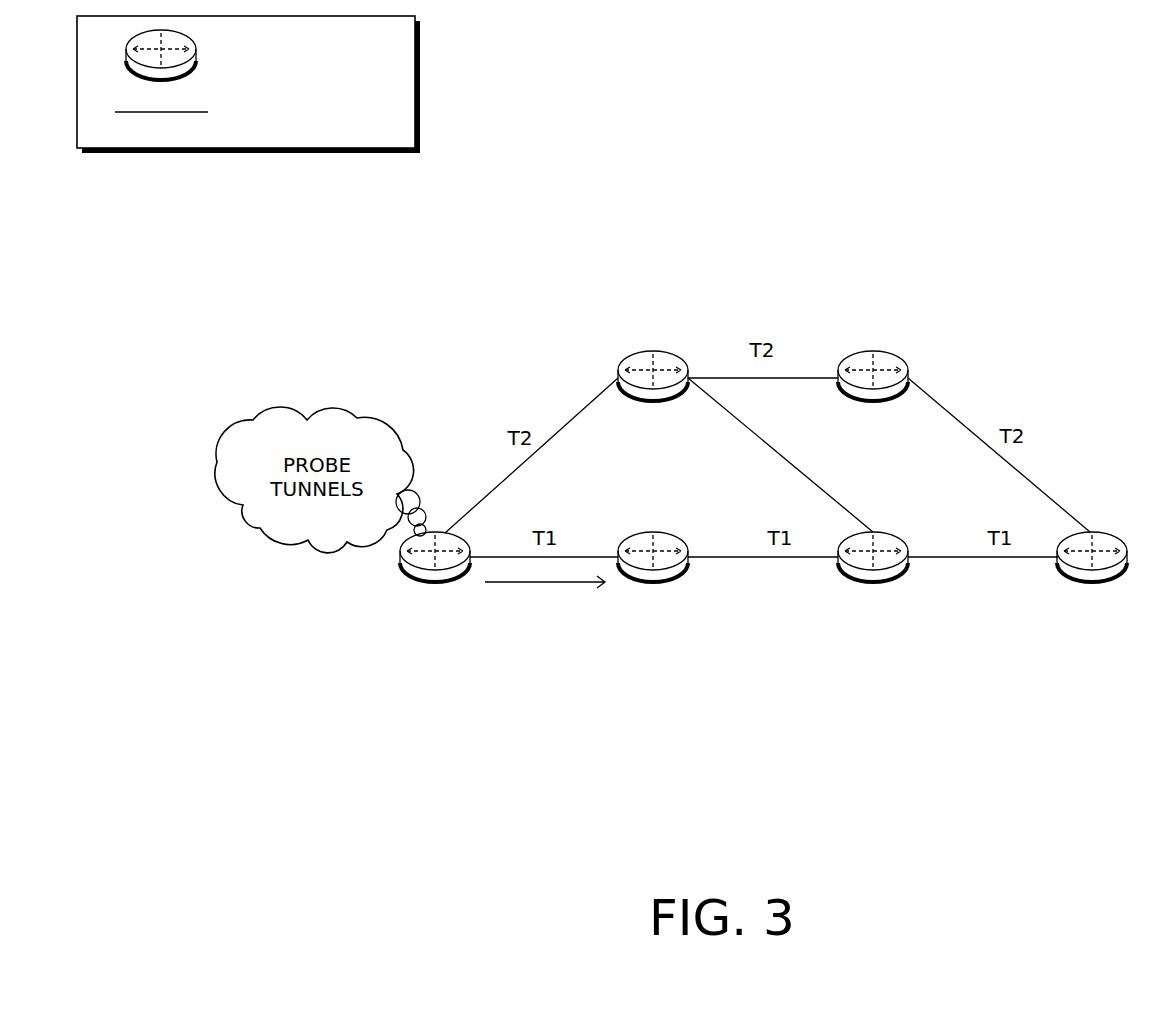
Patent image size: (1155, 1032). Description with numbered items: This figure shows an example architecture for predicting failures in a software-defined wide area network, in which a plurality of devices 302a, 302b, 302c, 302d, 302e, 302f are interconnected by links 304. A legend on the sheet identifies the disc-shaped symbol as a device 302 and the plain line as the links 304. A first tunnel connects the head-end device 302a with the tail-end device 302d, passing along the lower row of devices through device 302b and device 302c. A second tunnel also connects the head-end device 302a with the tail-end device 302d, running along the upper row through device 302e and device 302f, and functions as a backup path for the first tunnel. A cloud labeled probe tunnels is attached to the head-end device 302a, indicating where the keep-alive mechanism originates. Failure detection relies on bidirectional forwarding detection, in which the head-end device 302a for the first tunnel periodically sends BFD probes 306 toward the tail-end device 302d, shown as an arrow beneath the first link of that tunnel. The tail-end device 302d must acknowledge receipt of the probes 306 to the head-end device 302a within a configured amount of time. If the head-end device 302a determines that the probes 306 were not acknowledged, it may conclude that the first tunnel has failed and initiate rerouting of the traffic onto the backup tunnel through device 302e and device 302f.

The device 302 is at (253, 55).
The links 304 is at (238, 112).
The head-end device 302a is at (435, 576).
The device 302b is at (653, 576).
The device 302c is at (873, 576).
The tail-end device 302d is at (1092, 576).
The device 302e is at (653, 397).
The device 302f is at (873, 397).
The BFD probes 306 is at (565, 636).